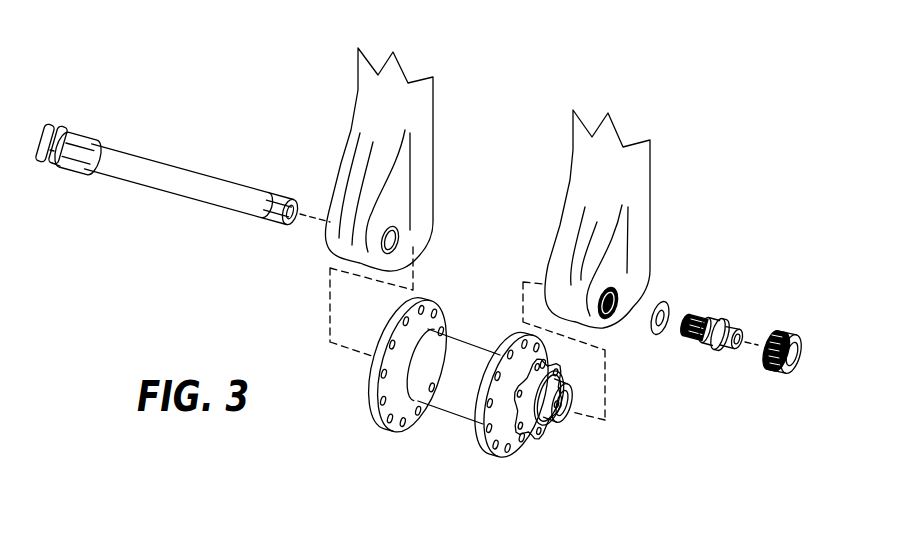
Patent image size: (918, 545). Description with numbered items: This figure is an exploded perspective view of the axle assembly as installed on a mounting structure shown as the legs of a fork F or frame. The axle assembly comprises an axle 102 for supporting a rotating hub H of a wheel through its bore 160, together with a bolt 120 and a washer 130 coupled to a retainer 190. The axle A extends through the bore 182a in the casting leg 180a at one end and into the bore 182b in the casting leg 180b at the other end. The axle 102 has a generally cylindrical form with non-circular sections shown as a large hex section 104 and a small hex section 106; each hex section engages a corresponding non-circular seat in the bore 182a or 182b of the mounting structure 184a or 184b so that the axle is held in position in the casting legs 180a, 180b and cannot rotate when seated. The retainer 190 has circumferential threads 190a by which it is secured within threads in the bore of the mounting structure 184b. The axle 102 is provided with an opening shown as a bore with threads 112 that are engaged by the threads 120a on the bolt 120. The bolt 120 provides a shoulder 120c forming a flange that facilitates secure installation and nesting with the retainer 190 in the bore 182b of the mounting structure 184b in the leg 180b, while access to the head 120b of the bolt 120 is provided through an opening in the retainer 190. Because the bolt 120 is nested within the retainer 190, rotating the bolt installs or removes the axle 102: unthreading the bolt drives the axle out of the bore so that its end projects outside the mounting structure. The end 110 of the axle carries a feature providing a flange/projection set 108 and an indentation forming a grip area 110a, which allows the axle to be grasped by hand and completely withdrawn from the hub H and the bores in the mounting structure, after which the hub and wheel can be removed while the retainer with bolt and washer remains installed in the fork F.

The axle A is at (174, 134).
The axle 102 is at (182, 201).
The hex section (large) 104 is at (86, 134).
The hex section (small) 106 is at (278, 223).
The flange/projection set 108 is at (57, 168).
The end 110 is at (44, 125).
The grip area 110a is at (61, 126).
The threads 112 is at (303, 209).
The fork F is at (444, 89).
The casting leg 180a is at (357, 88).
The casting leg 180b is at (571, 158).
The bore 182a is at (399, 235).
The bore 182b is at (624, 302).
The mounting structure 184a is at (371, 214).
The mounting structure 184b is at (582, 266).
The hub H is at (446, 451).
The bore 160 is at (564, 421).
The washer 130 is at (669, 299).
The bolt 120 is at (737, 332).
The threads 120a is at (699, 317).
The head 120b is at (727, 353).
The shoulder 120c is at (714, 349).
The retainer 190 is at (778, 332).
The circumferential threads 190a is at (773, 373).